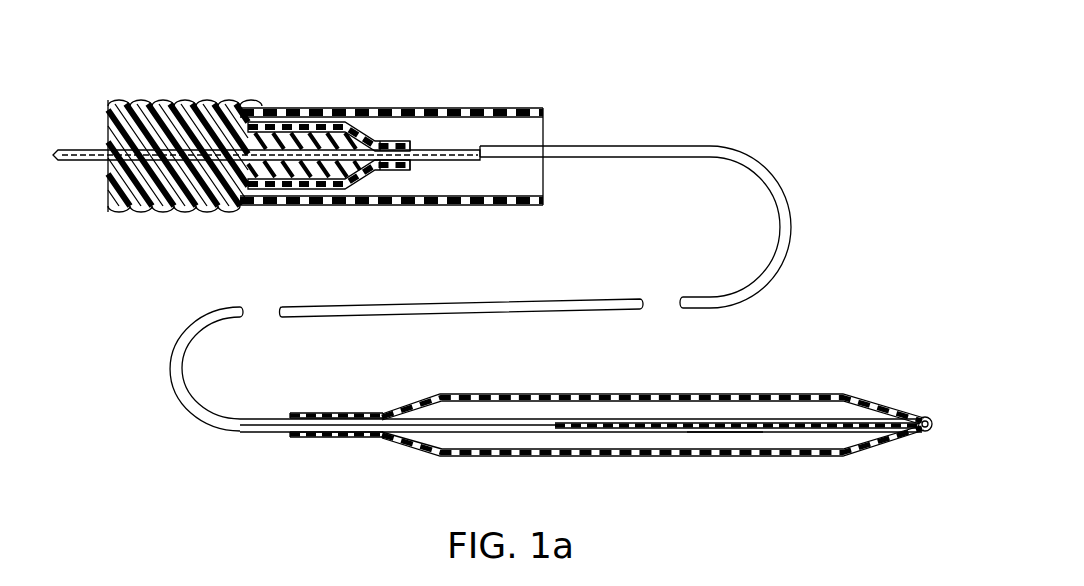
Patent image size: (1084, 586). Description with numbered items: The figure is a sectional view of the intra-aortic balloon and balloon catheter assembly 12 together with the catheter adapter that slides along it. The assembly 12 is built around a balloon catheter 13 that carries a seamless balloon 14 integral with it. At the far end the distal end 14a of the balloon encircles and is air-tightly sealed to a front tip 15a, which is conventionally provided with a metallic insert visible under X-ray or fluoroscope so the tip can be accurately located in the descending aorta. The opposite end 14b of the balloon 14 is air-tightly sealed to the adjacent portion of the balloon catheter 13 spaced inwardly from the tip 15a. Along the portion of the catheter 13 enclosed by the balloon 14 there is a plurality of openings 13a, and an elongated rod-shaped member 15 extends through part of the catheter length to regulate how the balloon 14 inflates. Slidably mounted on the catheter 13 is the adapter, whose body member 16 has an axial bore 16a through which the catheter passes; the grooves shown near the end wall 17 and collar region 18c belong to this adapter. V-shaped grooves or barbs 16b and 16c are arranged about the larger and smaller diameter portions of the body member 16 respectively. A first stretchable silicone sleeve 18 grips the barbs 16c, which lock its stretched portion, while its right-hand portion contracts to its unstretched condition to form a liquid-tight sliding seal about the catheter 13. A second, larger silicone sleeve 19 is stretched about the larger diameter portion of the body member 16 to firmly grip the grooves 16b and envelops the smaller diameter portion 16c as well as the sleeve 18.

The balloon catheter assembly 12 is at (306, 479).
The balloon catheter 13 is at (518, 147).
The openings 13a is at (763, 432).
The intra-aortic balloon 14 is at (560, 395).
The distal end of the balloon 14a is at (932, 422).
The opposite end of the balloon 14b is at (327, 415).
The rod-shaped member 15 is at (620, 422).
The front tip with metallic insert 15a is at (921, 434).
The body member 16 is at (216, 152).
The axial bore 16a is at (110, 158).
The V-shaped grooves or barbs 16b is at (182, 207).
The V-shaped grooves or barbs 16c is at (300, 177).
The sleeve end wall 17 is at (152, 200).
The first stretchable silicone sleeve 18 is at (348, 118).
The inner tube collar 18c is at (387, 140).
The second stretchable silicone sleeve 19 is at (460, 110).